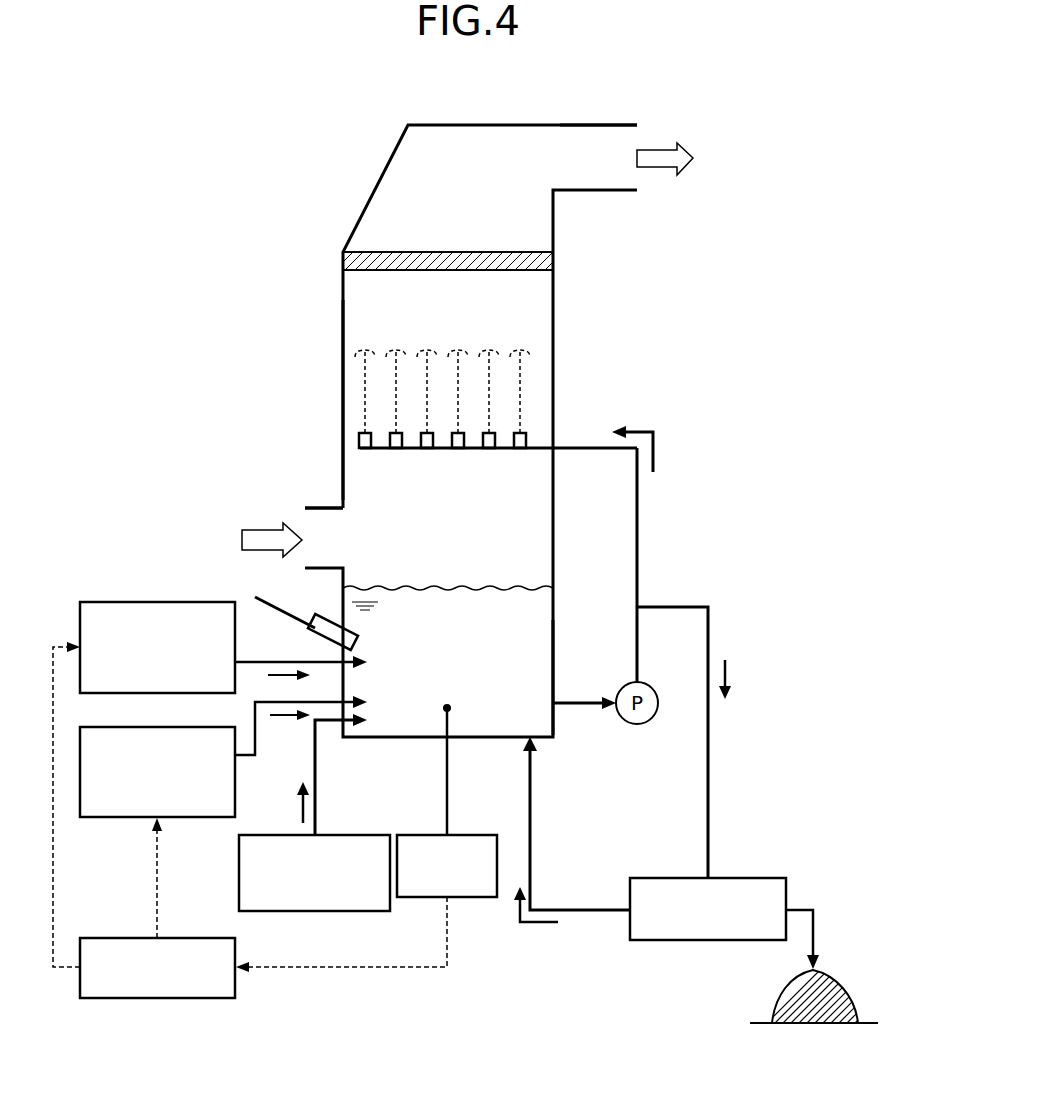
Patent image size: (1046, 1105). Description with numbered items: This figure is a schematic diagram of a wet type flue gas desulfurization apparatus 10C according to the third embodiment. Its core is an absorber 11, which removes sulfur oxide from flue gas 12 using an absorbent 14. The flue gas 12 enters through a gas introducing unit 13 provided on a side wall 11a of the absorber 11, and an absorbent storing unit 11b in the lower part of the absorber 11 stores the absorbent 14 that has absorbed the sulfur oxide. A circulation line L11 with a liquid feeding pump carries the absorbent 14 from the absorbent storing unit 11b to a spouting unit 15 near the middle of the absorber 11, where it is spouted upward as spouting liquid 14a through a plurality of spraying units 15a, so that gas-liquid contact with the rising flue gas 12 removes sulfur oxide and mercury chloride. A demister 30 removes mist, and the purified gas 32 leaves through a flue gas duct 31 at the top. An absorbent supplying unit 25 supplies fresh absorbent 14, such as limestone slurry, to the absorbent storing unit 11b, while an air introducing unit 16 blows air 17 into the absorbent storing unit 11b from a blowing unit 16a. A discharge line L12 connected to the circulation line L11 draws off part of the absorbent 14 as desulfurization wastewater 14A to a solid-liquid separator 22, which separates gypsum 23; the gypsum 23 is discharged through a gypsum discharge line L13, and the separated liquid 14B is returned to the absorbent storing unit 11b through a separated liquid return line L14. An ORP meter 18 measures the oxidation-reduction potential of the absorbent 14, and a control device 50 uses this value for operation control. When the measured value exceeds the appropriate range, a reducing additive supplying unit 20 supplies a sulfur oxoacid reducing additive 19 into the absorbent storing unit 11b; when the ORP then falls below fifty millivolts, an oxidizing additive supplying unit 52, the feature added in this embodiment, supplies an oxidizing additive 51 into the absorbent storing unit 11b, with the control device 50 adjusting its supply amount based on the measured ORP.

The wet type flue gas desulfurization apparatus 10C is at (288, 120).
The absorber 11 is at (386, 154).
The side wall 11a is at (341, 405).
The absorbent storing unit 11b is at (553, 652).
The flue gas 12 is at (262, 529).
The gas introducing unit 13 is at (319, 506).
The absorbent 14 is at (538, 614).
The spouting liquid 14a is at (523, 370).
The desulfurization wastewater 14A is at (728, 670).
The separated liquid 14B is at (535, 927).
The spouting unit 15 is at (540, 415).
The spraying unit 15a is at (528, 443).
The air introducing unit 16 is at (296, 640).
The blowing unit 16a is at (326, 618).
The air 17 is at (280, 625).
The ORP meter 18 is at (472, 834).
The sulfur oxoacid reducing additive 19 is at (290, 677).
The reducing additive supplying unit 20 is at (97, 601).
The solid-liquid separator 22 is at (736, 877).
The gypsum 23 is at (775, 996).
The absorbent supplying unit 25 is at (341, 834).
The demister 30 is at (344, 240).
The flue gas duct 31 is at (586, 123).
The purified gas 32 is at (657, 142).
The control device 50 is at (101, 937).
The oxidizing additive 51 is at (278, 722).
The oxidizing additive supplying unit 52 is at (99, 726).
The circulation line L11 is at (640, 522).
The discharge line L12 is at (712, 772).
The gypsum discharge line L13 is at (809, 902).
The separated liquid return line L14 is at (533, 787).